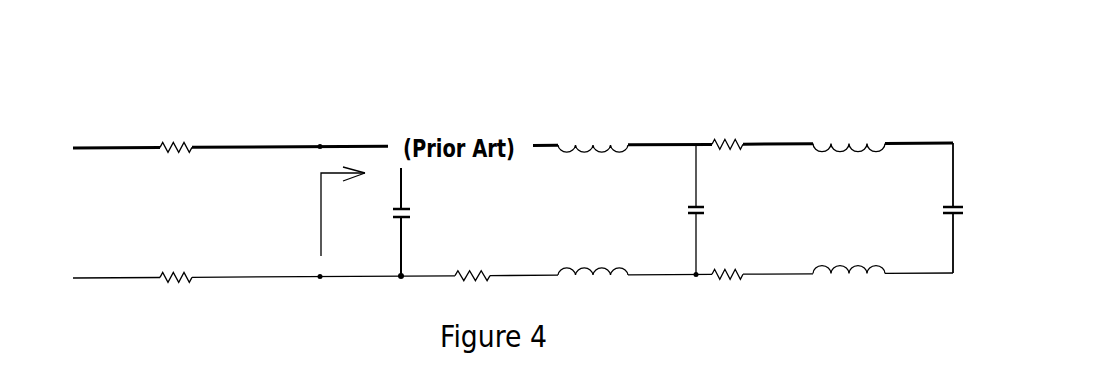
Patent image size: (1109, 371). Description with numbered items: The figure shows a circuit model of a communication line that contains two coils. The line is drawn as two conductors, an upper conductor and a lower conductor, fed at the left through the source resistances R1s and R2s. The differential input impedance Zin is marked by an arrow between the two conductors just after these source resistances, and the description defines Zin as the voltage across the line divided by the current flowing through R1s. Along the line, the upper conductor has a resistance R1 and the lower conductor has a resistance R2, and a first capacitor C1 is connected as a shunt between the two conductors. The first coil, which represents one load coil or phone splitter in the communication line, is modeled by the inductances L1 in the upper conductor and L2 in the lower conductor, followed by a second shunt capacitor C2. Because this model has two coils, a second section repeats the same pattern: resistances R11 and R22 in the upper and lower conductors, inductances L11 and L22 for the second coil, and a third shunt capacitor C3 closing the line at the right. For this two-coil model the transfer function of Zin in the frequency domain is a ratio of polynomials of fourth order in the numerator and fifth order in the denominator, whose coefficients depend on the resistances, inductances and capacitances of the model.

The element R1 is at (572, 129).
The element R1s is at (134, 132).
The element R2s is at (264, 261).
The differential input impedance Zin is at (344, 211).
The element C1 is at (409, 223).
The element R2 is at (506, 260).
The element L1 is at (593, 138).
The element L2 is at (635, 256).
The element C2 is at (683, 211).
The second top resistance R11 is at (727, 130).
The second bottom resistance R22 is at (762, 260).
The second series inductor, top L11 is at (849, 137).
The second series inductor, bottom L22 is at (883, 255).
The third shunt capacitor C3 is at (941, 208).